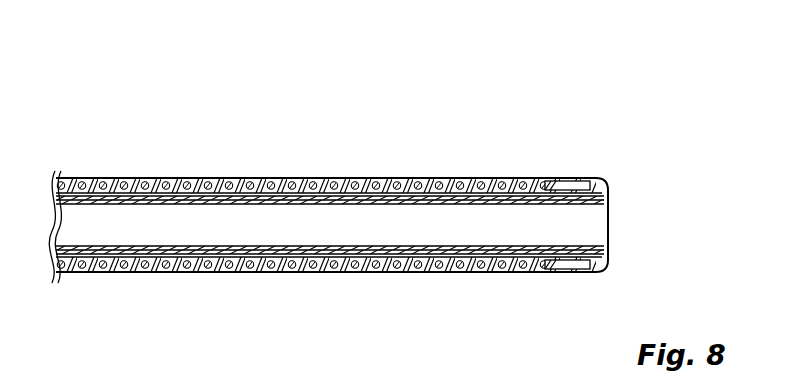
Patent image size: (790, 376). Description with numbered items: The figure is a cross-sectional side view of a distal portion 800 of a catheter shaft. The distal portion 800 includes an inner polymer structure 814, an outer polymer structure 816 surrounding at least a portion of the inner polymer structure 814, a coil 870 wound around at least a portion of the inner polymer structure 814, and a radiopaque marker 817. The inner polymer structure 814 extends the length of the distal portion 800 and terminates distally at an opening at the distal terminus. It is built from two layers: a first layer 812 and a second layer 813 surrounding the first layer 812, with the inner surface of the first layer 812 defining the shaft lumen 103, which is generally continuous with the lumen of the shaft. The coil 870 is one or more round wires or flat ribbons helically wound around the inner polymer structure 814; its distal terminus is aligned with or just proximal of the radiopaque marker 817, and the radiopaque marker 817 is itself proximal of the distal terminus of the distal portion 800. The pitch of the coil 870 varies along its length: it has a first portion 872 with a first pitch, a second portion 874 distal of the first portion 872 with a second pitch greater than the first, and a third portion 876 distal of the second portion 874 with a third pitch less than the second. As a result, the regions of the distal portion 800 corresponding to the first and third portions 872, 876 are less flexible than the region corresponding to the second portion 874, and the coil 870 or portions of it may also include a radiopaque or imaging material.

The distal portion 800 is at (53, 92).
The first portion 872 is at (217, 166).
The second portion 874 is at (372, 166).
The third portion 876 is at (547, 166).
The radiopaque marker 817 is at (563, 180).
The inner polymer structure 814 is at (612, 188).
The first layer 812 is at (128, 204).
The second layer 813 is at (182, 200).
The lumen 103 is at (364, 235).
The outer polymer structure 816 is at (308, 273).
The coil 870 is at (447, 273).